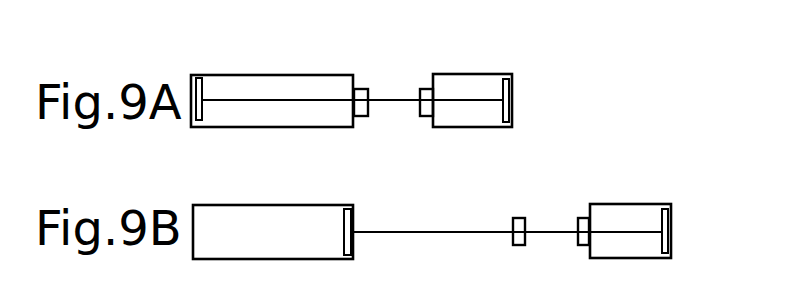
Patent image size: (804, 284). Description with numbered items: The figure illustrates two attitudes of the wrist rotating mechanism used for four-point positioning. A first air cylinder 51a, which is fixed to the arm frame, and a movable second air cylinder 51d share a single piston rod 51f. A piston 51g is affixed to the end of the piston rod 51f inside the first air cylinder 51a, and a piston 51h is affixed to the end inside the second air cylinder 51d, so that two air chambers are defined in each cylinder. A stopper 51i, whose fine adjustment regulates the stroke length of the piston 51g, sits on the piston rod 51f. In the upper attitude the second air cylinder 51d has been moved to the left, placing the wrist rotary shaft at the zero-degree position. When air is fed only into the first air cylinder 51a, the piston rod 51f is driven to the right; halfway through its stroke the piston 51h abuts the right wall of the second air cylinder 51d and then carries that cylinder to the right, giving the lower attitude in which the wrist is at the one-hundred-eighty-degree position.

In FIG. 9A, the first air cylinder 51a is at (282, 74).
In FIG. 9B, the first air cylinder 51a is at (285, 203).
In FIG. 9A, the second air cylinder 51d is at (484, 73).
In FIG. 9B, the second air cylinder 51d is at (645, 204).
In FIG. 9A, the piston rod 51f is at (396, 98).
In FIG. 9B, the piston rod 51f is at (452, 230).
In FIG. 9A, the piston 51g is at (202, 126).
In FIG. 9B, the piston 51g is at (354, 240).
In FIG. 9A, the piston 51h is at (510, 115).
In FIG. 9B, the piston 51h is at (670, 238).
In FIG. 9A, the stopper 51i is at (361, 118).
In FIG. 9B, the stopper 51i is at (517, 217).